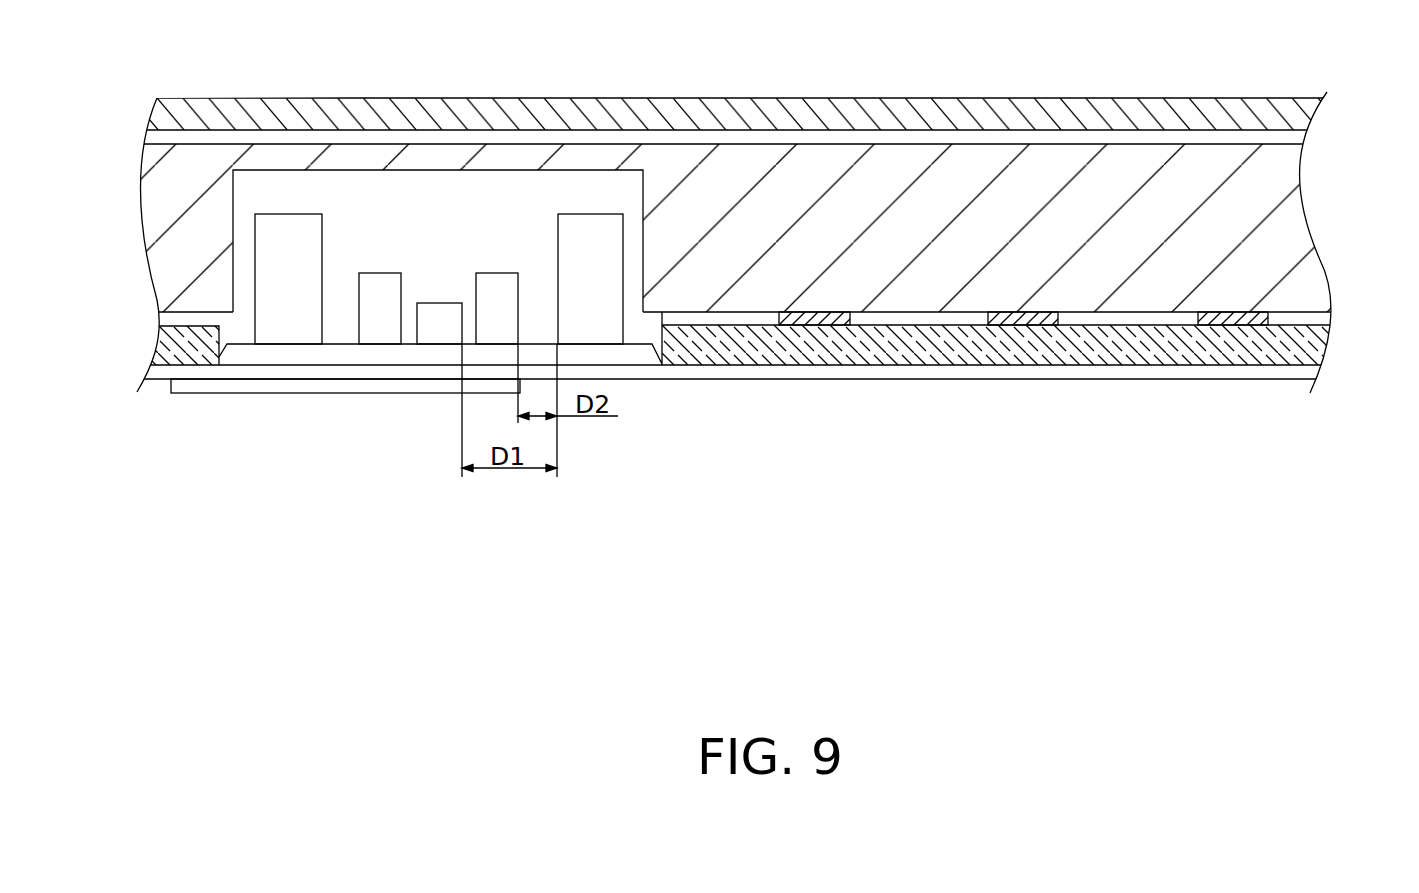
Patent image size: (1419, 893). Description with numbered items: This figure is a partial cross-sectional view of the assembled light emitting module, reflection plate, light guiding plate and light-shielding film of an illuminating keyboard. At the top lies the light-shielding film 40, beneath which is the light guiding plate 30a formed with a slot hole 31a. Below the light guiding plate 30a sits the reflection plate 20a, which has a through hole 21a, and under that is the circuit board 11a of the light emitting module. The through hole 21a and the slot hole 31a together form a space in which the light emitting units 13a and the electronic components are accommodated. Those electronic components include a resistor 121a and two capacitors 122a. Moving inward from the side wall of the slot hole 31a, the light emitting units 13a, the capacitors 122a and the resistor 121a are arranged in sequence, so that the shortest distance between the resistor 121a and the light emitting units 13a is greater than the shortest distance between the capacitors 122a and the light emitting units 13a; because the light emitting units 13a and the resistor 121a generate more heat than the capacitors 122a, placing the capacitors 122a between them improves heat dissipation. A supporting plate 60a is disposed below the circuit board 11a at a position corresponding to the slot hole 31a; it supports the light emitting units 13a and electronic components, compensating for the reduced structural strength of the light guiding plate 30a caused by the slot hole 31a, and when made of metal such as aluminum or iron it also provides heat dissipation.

The light-shielding film 40 is at (183, 107).
The light guiding plate 30a is at (1293, 230).
The slot hole 31a is at (316, 168).
The light emitting units 13a is at (265, 232).
The capacitors 122a is at (500, 280).
The resistor 121a is at (438, 312).
The circuit board 11a is at (643, 370).
The reflection plate 20a is at (757, 353).
The through hole 21a is at (227, 327).
The supporting plate 60a is at (222, 387).